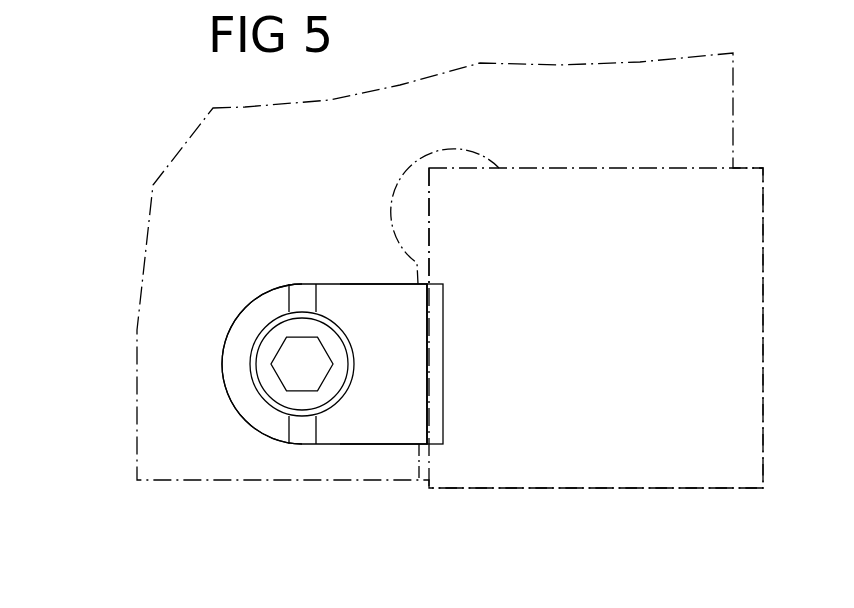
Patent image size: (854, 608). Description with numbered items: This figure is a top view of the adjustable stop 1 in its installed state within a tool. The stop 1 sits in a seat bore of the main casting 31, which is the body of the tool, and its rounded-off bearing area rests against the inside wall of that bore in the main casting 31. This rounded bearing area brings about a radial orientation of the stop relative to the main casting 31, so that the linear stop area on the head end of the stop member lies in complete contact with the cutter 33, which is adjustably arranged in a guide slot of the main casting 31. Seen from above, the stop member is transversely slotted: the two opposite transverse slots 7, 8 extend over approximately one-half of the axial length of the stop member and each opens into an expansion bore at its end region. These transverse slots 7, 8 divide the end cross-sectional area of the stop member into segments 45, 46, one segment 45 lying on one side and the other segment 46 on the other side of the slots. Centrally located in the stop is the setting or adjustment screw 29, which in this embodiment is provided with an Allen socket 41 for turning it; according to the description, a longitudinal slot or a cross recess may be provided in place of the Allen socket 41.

The adjustable stop 1 is at (370, 446).
The transverse slot 7 is at (302, 432).
The transverse slot 8 is at (302, 295).
The adjustment screw 29 is at (272, 383).
The main casting 31 is at (160, 387).
The cutter 33 is at (498, 450).
The Allen socket 41 is at (285, 357).
The segment 45 is at (365, 302).
The segment 46 is at (270, 307).